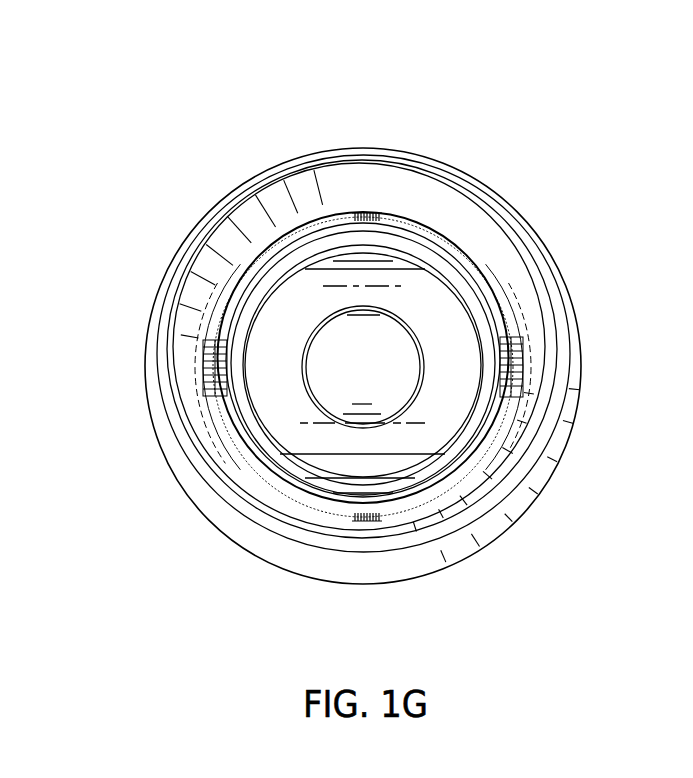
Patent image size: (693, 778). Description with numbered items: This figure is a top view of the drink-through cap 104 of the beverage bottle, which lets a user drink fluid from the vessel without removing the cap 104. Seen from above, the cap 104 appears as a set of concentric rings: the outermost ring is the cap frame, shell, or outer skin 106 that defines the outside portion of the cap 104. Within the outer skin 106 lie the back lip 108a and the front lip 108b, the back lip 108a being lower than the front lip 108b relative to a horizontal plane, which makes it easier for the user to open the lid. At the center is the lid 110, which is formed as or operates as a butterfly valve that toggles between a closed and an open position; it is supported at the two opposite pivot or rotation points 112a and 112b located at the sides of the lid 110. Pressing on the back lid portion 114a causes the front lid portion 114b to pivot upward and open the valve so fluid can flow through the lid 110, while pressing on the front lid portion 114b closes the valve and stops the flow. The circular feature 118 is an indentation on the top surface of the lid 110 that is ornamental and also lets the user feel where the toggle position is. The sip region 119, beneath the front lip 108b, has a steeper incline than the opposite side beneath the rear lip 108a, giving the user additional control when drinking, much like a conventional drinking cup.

The cap 104 is at (288, 126).
The outer skin 106 is at (552, 480).
The back lip 108a is at (362, 150).
The front lip 108b is at (388, 548).
The lid 110 is at (442, 312).
The pivot or rotation point 112a is at (222, 362).
The pivot or rotation point 112b is at (507, 362).
The back lid portion 114a is at (375, 265).
The front lid portion 114b is at (340, 482).
The feature 118 is at (395, 388).
The sip region 119 is at (394, 527).